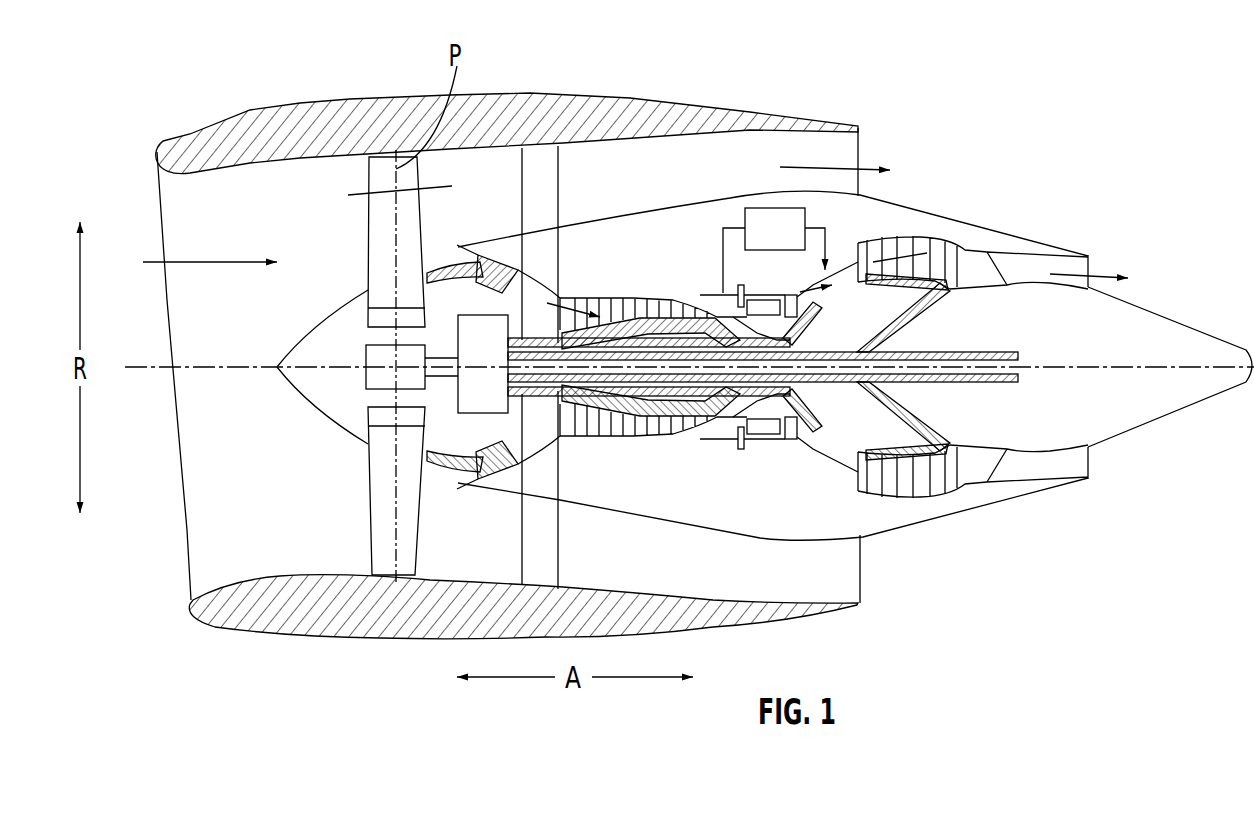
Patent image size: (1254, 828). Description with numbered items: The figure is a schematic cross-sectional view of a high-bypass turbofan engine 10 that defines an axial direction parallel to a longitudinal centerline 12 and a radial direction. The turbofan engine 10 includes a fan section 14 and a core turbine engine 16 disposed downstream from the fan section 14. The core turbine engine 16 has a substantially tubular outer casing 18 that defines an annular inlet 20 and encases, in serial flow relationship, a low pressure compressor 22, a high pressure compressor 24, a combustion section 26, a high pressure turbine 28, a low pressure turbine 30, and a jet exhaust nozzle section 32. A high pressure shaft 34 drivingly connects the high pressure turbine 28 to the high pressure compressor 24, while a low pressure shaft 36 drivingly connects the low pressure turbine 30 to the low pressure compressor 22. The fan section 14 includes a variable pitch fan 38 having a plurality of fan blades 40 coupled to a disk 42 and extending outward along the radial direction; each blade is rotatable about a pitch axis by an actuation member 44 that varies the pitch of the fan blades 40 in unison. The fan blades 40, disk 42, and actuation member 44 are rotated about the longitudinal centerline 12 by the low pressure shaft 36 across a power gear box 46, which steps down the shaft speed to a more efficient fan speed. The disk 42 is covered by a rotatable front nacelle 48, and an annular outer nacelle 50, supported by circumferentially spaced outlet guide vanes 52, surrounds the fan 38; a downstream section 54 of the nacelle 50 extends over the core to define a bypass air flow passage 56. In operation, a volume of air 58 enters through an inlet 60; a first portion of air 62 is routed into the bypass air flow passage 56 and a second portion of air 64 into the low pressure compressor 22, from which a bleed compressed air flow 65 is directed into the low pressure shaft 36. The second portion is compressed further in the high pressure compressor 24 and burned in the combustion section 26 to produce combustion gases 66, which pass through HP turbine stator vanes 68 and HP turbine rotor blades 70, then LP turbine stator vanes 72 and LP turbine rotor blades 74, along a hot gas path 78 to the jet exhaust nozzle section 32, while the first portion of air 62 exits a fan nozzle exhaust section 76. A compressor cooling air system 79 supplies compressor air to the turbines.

The turbofan engine 10 is at (1003, 105).
The longitudinal centerline 12 is at (1027, 365).
The fan section 14 is at (408, 52).
The core turbine engine 16 is at (839, 372).
The outer casing 18 is at (702, 532).
The annular inlet 20 is at (462, 476).
The low pressure compressor 22 is at (522, 439).
The high pressure compressor 24 is at (587, 434).
The combustion section 26 is at (756, 440).
The high pressure turbine 28 is at (838, 434).
The low pressure turbine 30 is at (935, 494).
The jet exhaust nozzle section 32 is at (1011, 484).
The high pressure shaft 34 is at (740, 318).
The low pressure shaft 36 is at (845, 352).
The variable pitch fan 38 is at (323, 367).
The fan blades 40 is at (366, 500).
The disk 42 is at (385, 318).
The actuation member 44 is at (366, 356).
The power gear box 46 is at (603, 113).
The front nacelle 48 is at (277, 368).
The outer nacelle 50 is at (398, 640).
The outlet guide vanes 52 is at (559, 178).
The downstream section 54 is at (785, 112).
The bypass air flow passage 56 is at (686, 195).
The volume of air 58 is at (200, 260).
The inlet 60 is at (193, 577).
The first portion of air 62 is at (377, 192).
The second portion of air 64 is at (450, 262).
The compressed air flow 65 is at (537, 298).
The combustion gases 66 is at (900, 250).
The HP turbine stator vanes 68 is at (787, 437).
The HP turbine rotor blades 70 is at (790, 444).
The LP turbine stator vanes 72 is at (866, 473).
The LP turbine rotor blades 74 is at (870, 472).
The fan nozzle exhaust section 76 is at (850, 148).
The hot gas path 78 is at (848, 266).
The compressor cooling air system 79 is at (764, 244).